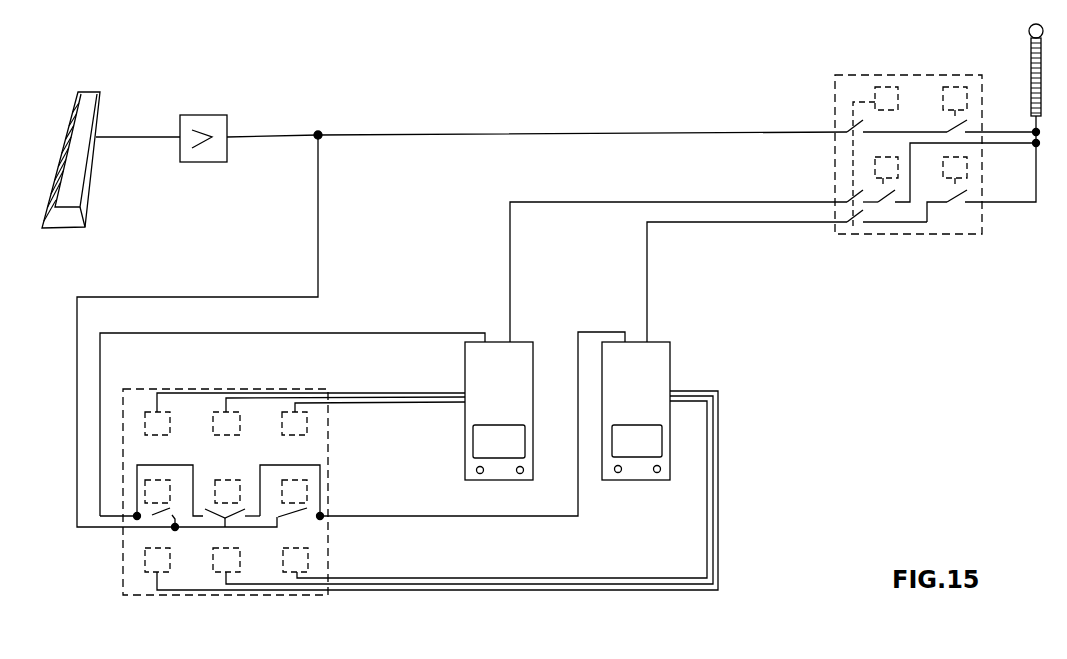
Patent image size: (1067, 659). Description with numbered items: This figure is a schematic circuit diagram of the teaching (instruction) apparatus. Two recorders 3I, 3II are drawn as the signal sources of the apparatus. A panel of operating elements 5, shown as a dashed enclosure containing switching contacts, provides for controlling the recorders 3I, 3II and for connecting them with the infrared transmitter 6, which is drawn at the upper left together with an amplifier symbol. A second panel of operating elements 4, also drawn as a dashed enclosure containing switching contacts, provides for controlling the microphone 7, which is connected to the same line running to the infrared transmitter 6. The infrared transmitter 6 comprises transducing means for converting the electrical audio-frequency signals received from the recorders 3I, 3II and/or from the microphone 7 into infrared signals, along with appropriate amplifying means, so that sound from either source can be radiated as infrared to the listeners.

The infrared transmitter 6 is at (85, 123).
The microphone 7 is at (1029, 37).
The panel of operating elements 4 is at (952, 222).
The recorder 3I is at (510, 360).
The recorder 3II is at (653, 360).
The panel of operating elements 5 is at (310, 446).